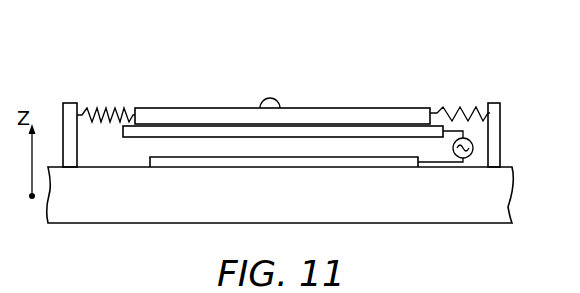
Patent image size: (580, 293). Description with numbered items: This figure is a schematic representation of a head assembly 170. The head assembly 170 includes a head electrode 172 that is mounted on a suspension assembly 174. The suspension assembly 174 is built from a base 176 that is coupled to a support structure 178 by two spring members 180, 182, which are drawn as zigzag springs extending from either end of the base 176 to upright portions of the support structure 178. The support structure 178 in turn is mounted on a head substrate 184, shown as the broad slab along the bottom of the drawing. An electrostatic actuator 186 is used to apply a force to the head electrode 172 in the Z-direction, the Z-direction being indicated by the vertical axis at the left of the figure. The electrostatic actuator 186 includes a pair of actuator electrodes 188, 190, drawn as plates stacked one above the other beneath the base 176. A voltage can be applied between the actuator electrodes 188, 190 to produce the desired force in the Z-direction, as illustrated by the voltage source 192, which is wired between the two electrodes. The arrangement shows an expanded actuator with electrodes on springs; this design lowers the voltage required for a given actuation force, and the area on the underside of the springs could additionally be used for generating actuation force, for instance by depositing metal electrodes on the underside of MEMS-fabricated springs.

The head assembly 170 is at (499, 60).
The head electrode 172 is at (271, 97).
The suspension assembly 174 is at (168, 50).
The base 176 is at (228, 112).
The support structure 178 is at (501, 133).
The spring member 180 is at (96, 107).
The spring member 182 is at (453, 108).
The head substrate 184 is at (428, 224).
The electrostatic actuator 186 is at (140, 145).
The actuator electrode 188 is at (325, 133).
The actuator electrode 190 is at (257, 164).
The voltage source 192 is at (470, 156).